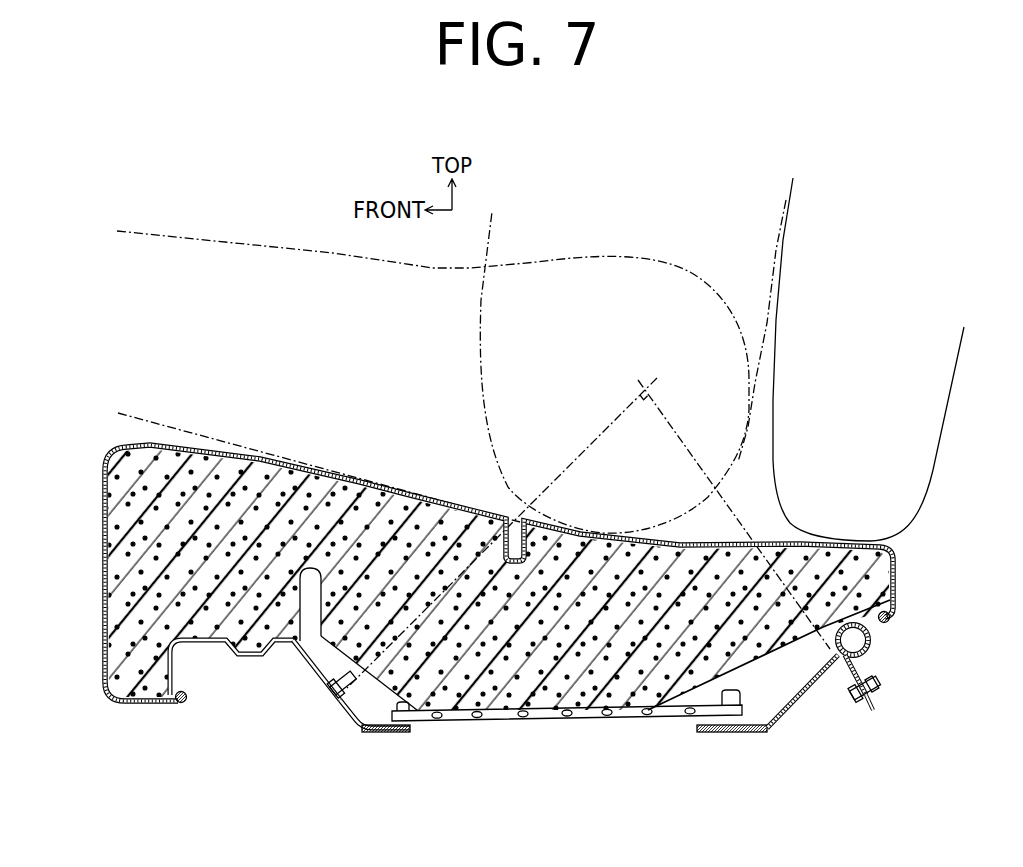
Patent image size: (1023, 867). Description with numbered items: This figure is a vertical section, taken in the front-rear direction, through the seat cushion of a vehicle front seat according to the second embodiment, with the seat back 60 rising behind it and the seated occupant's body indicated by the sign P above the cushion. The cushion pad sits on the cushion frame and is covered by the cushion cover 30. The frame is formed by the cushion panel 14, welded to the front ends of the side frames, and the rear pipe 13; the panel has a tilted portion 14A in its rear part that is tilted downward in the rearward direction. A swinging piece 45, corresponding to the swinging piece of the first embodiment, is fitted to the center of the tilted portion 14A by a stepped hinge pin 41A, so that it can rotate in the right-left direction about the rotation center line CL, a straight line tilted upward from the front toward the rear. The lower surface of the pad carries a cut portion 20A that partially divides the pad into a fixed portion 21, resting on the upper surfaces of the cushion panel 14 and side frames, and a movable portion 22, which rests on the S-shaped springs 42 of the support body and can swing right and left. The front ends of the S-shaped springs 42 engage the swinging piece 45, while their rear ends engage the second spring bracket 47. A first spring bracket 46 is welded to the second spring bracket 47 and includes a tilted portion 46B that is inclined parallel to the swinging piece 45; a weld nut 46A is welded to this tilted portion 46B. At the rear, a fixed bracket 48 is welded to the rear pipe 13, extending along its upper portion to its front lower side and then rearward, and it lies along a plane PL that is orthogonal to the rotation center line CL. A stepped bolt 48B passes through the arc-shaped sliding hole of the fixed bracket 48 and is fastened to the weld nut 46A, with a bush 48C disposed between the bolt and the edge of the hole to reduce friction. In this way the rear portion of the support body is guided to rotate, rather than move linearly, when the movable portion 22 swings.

The rear pipe 13 is at (871, 643).
The cushion panel 14 is at (207, 642).
The tilted portion 14A is at (313, 665).
The cut portion 20A is at (310, 600).
The fixed portion 21 is at (163, 470).
The movable portion 22 is at (681, 697).
The cushion cover 30 is at (303, 467).
The stepped hinge pin 41A is at (347, 690).
The S-shaped springs 42 is at (500, 719).
The swinging piece 45 is at (353, 722).
The first spring bracket 46 is at (793, 703).
The weld nut 46A is at (862, 705).
The tilted portion 46B is at (846, 675).
The second spring bracket 47 is at (760, 722).
The fixed bracket 48 is at (877, 707).
The stepped bolt 48B is at (877, 683).
The bush 48C is at (880, 700).
The seat back 60 is at (898, 484).
The lower limb of the seated occupant P is at (330, 252).
The rotation center line CL is at (593, 437).
The plane PL is at (682, 447).